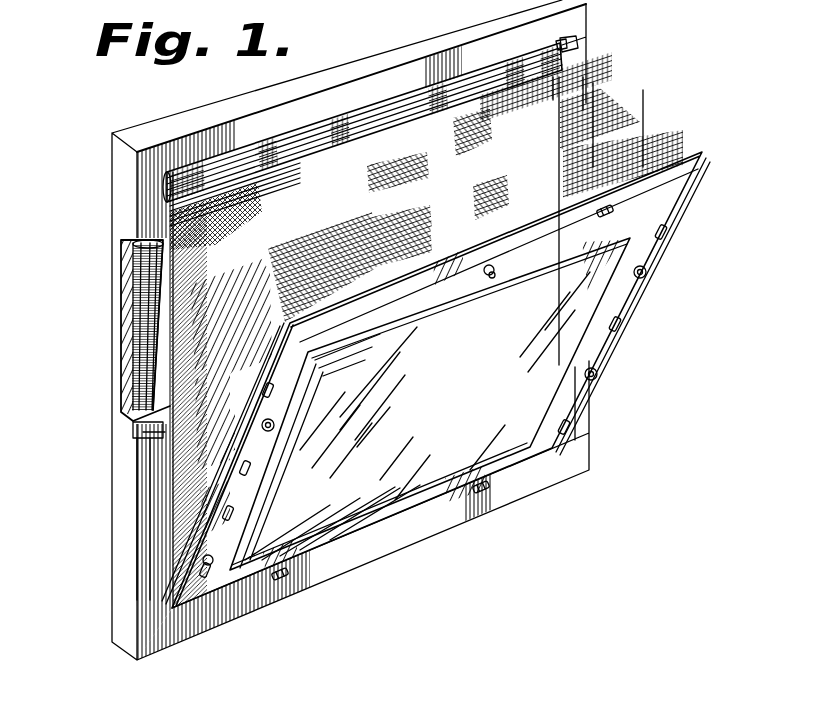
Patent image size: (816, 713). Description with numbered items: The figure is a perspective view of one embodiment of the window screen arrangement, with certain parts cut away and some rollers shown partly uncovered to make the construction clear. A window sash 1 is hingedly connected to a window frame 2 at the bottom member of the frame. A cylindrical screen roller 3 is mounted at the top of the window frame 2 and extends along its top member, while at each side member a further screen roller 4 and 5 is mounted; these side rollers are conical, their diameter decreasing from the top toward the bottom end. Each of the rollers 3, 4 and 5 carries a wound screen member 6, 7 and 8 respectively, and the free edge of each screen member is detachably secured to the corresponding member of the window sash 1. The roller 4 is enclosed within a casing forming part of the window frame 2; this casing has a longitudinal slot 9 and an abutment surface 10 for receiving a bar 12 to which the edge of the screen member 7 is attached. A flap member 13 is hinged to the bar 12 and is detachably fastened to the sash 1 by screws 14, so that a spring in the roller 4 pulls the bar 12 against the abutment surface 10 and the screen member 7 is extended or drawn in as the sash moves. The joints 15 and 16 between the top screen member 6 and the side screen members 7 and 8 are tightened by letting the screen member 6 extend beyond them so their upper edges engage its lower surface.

The window sash 1 is at (608, 302).
The window frame 2 is at (583, 455).
The cylindrical screen roller 3 is at (360, 110).
The screen roller 4 is at (140, 305).
The screen roller 5 is at (553, 183).
The screen member 6 is at (500, 137).
The screen member 7 is at (190, 452).
The screen member 8 is at (632, 257).
The longitudinal slot 9 is at (173, 503).
The abutment surface 10 is at (168, 532).
The bar 12 is at (670, 208).
The flap member 13 is at (202, 583).
The screws 14 is at (600, 371).
The joint 15 is at (248, 262).
The joint 16 is at (683, 143).